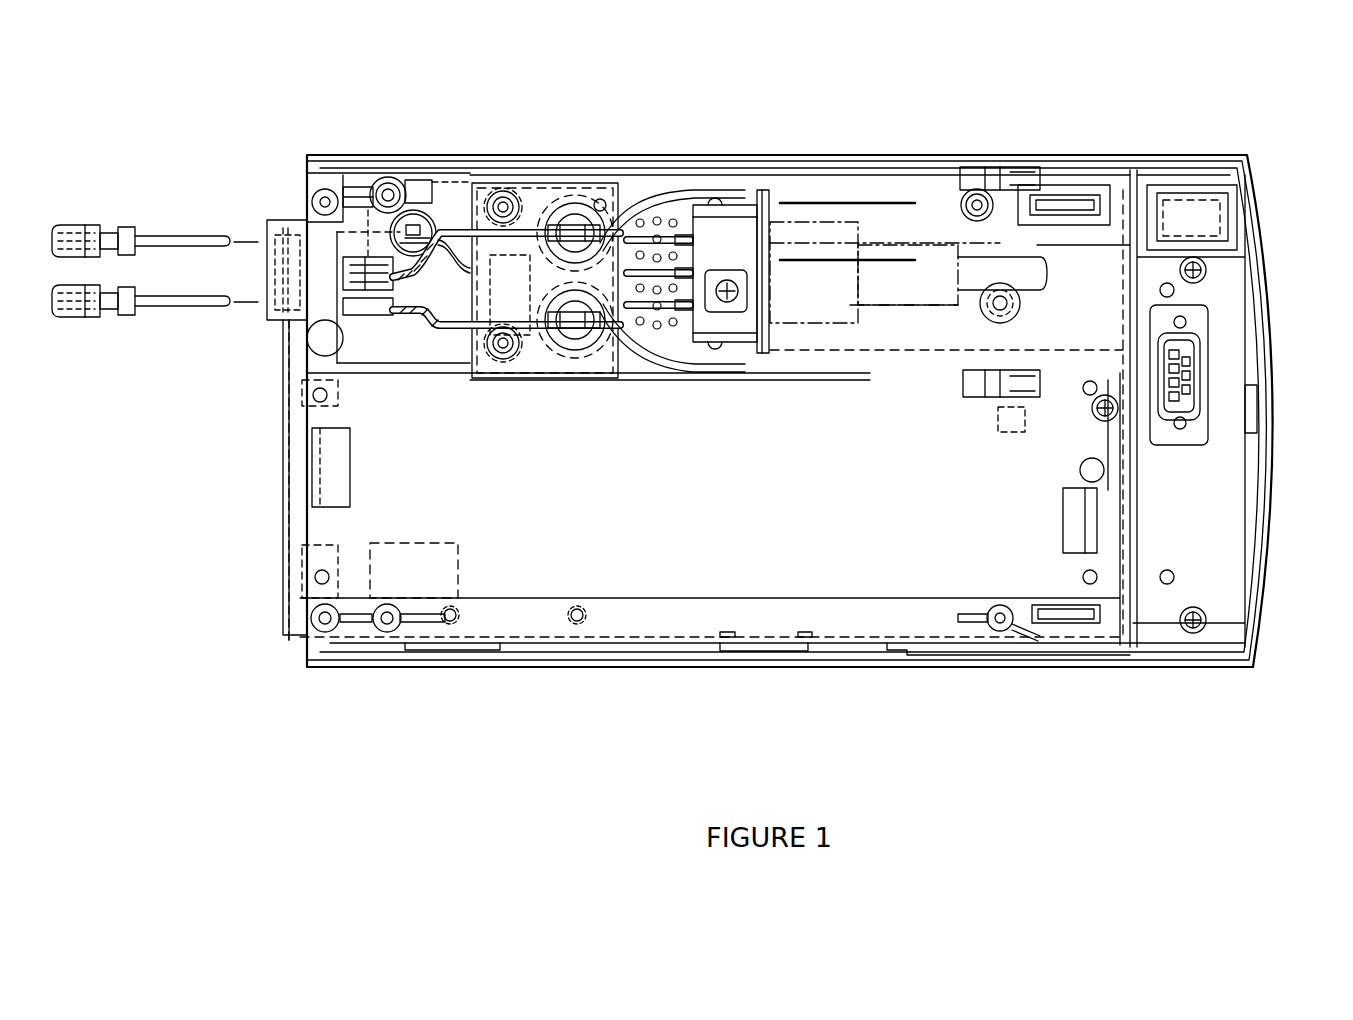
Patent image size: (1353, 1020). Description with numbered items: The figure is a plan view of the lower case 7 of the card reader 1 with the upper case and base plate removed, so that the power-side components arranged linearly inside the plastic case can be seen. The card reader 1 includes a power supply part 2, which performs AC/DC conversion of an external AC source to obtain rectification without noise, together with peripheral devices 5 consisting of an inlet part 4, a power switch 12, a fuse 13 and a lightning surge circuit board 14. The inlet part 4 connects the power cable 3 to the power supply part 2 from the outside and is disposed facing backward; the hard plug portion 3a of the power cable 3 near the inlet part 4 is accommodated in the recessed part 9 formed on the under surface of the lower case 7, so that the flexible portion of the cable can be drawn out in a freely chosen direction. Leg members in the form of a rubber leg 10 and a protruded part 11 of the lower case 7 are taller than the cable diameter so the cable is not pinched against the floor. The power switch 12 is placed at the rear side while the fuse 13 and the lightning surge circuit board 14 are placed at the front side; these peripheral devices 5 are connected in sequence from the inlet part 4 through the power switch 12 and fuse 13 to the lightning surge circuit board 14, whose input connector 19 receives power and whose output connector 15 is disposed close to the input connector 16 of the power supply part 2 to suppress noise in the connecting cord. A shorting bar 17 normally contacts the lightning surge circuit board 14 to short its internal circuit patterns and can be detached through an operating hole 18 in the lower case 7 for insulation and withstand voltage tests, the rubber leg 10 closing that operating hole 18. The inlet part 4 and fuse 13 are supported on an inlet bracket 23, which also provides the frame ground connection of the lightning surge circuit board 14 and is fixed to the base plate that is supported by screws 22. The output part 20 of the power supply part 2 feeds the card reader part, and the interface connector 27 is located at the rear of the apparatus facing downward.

The card reader 1 is at (166, 105).
The power supply part 2 is at (667, 590).
The power cable 3 is at (931, 245).
The hard portion (plug part) of the power cable 3a is at (815, 205).
The inlet part 4 is at (738, 232).
The peripheral devices 5 is at (612, 130).
The lower case 7 is at (465, 656).
The recessed part 9 is at (1093, 273).
The rubber leg 10 is at (472, 188).
The protruded part 11 is at (1069, 193).
The power switch 12 is at (1203, 215).
The fuse 13 is at (565, 195).
The lightning surge circuit board 14 is at (312, 237).
The output connector 15 is at (275, 222).
The input connector 16 is at (338, 493).
The shorting bar 17 is at (432, 178).
The operating hole 18 is at (396, 178).
The input connector of the lightning surge circuit board 19 is at (457, 325).
The output part 20 is at (1063, 524).
The screws 22 is at (738, 300).
The inlet bracket 23 is at (697, 192).
The interface connector 27 is at (1203, 362).